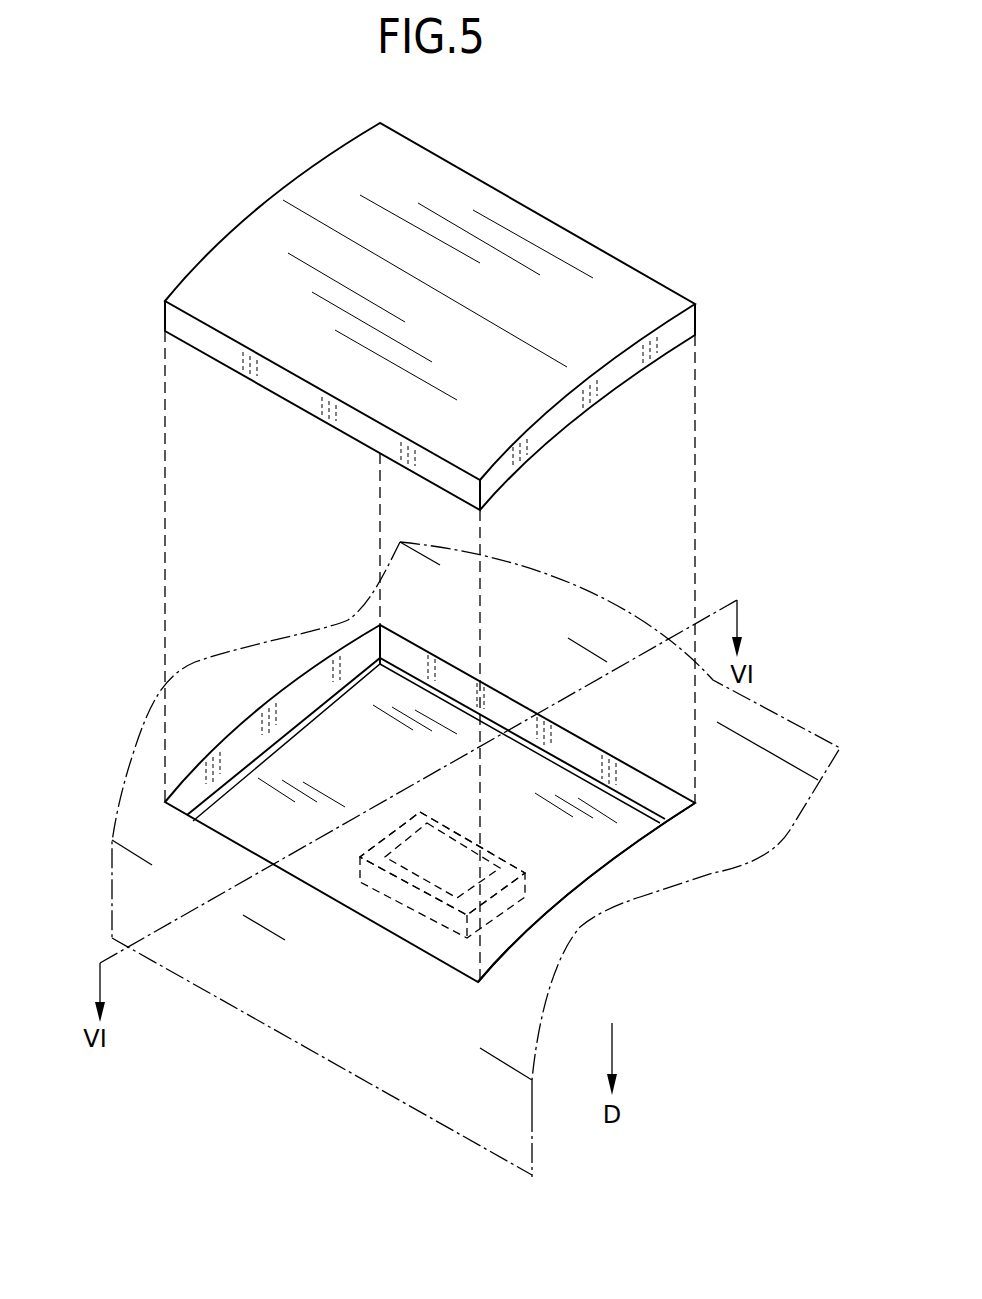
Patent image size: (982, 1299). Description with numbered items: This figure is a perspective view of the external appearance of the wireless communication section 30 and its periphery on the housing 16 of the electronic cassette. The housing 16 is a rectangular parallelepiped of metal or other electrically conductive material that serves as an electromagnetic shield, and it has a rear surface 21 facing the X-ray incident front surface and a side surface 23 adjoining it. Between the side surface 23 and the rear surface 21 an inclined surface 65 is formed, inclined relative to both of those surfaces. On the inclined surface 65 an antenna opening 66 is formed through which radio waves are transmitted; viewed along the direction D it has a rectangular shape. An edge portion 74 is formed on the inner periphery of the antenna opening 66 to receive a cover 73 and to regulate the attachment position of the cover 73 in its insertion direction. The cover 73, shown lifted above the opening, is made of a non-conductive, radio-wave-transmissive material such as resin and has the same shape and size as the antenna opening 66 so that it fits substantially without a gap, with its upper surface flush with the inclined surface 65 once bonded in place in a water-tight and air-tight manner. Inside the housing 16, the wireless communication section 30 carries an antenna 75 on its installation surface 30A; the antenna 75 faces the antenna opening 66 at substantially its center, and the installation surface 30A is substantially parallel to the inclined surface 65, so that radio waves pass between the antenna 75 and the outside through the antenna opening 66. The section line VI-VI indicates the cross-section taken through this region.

The cover 73 is at (528, 211).
The edge portion 74 is at (240, 778).
The antenna opening 66 is at (584, 873).
The wireless communication section 30 is at (420, 896).
The installation surface 30A is at (397, 832).
The antenna 75 is at (487, 868).
The rear surface 21 is at (593, 603).
The inclined surface 65 is at (238, 660).
The side surface 23 is at (382, 1092).
The housing 16 is at (264, 996).